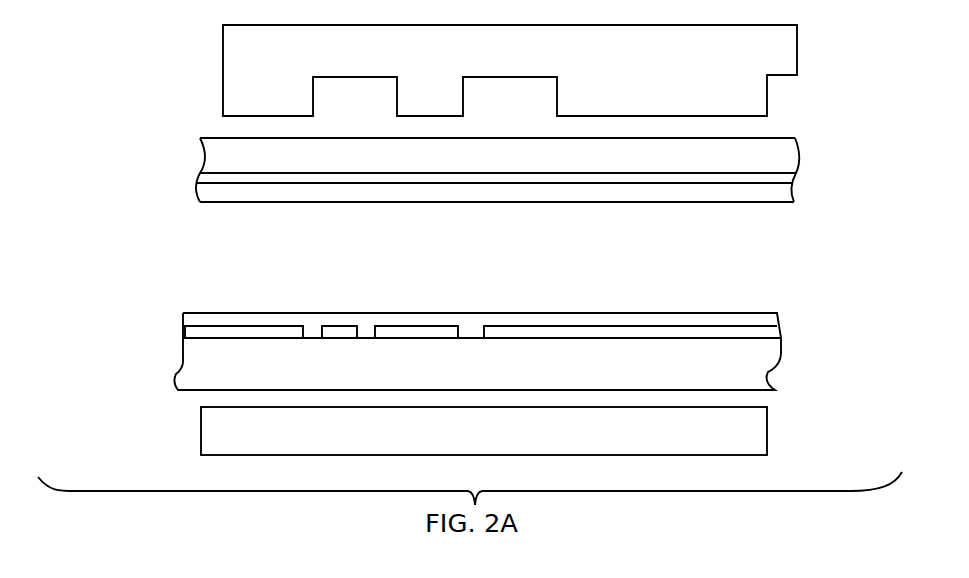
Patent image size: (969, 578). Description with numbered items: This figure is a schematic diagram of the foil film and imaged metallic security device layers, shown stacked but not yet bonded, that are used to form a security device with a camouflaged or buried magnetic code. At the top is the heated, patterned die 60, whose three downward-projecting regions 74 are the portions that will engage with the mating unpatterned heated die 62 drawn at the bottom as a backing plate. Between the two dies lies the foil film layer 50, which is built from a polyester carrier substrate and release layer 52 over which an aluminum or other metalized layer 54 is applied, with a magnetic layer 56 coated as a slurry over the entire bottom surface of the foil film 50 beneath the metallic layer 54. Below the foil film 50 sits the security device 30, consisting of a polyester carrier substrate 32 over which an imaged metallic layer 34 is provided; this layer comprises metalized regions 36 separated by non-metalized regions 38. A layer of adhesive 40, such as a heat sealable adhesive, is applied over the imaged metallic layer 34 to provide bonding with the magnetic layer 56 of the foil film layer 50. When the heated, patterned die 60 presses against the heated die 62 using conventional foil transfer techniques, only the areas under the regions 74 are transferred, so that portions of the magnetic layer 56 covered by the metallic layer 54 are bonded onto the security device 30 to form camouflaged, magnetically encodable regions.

The security device 30 is at (481, 329).
The polyester carrier substrate 32 is at (180, 374).
The imaged metallic layer 34 is at (481, 304).
The metalized regions 36 is at (190, 333).
The non-metalized regions 38 is at (312, 337).
The layer of adhesive 40 is at (190, 319).
The foil film layer 50 is at (500, 172).
The polyester carrier substrate and release layer 52 is at (200, 152).
The metalized layer 54 is at (198, 183).
The magnetic layer 56 is at (196, 197).
The heated, patterned die 60 is at (223, 78).
The heated die 62 is at (213, 429).
The regions of heated, patterned die 74 is at (279, 107).